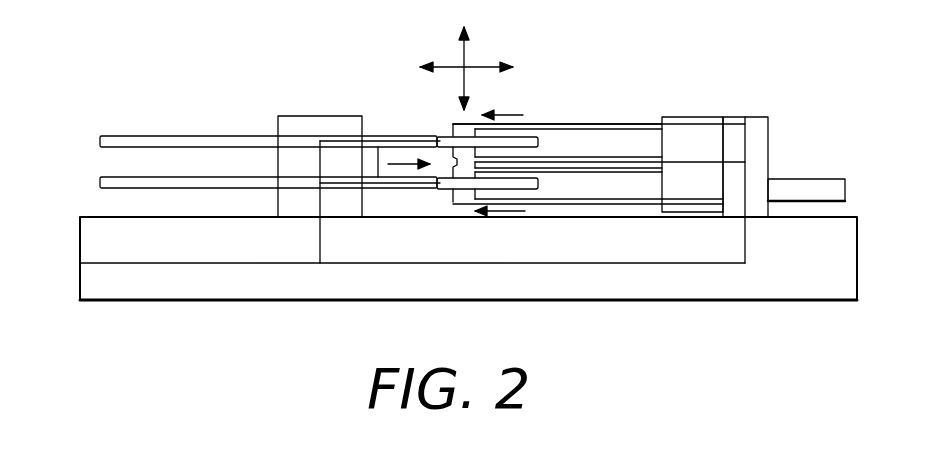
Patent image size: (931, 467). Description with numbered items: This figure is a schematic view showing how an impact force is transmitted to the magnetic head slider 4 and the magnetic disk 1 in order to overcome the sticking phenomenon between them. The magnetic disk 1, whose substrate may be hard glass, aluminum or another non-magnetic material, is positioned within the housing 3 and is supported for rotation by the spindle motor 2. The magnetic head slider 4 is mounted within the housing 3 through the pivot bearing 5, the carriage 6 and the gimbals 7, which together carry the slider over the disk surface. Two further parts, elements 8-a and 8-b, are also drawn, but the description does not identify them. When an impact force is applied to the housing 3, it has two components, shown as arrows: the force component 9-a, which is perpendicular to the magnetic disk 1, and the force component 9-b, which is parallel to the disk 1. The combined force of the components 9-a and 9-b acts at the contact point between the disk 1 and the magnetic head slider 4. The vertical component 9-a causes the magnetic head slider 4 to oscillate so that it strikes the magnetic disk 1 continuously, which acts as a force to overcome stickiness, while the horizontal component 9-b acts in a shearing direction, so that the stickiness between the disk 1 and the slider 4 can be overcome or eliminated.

The magnetic disk 1 is at (100, 137).
The spindle motor 2 is at (280, 116).
The housing 3 is at (611, 302).
The magnetic head slider 4 is at (453, 125).
The pivot bearing 5 is at (768, 118).
The carriage 6 is at (700, 117).
The gimbals 7 is at (545, 123).
The holder 8-a is at (392, 145).
The guide bars 8-b is at (630, 168).
The force component perpendicular to the magnetic disk 9-a is at (465, 52).
The force component parallel to the magnetic disk 9-b is at (450, 67).